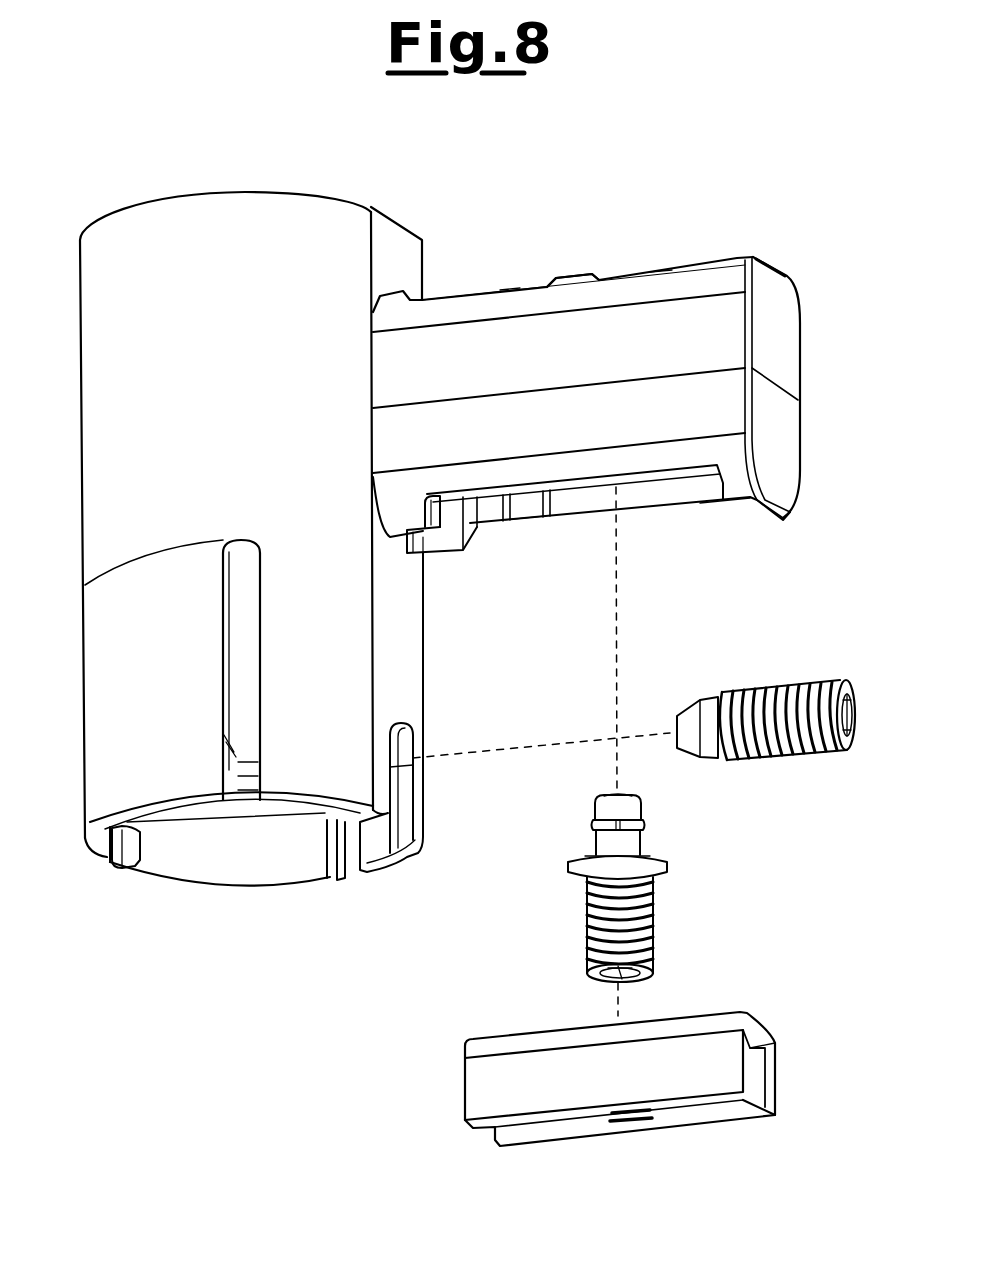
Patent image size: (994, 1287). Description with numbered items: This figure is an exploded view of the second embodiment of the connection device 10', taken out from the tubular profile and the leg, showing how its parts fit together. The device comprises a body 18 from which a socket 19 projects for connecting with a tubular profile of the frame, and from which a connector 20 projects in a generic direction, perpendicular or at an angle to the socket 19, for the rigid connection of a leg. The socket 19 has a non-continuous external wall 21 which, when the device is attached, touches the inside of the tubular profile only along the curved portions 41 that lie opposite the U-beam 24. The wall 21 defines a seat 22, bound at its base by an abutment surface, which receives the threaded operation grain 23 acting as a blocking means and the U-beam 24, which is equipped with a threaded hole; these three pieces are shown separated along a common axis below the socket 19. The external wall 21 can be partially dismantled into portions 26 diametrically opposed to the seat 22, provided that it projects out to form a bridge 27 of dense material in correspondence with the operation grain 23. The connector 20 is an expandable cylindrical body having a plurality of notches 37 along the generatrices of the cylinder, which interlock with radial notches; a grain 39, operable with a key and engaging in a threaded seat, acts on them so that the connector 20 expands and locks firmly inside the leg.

The connection device 10' is at (575, 147).
The body 18 is at (166, 228).
The socket 19 is at (782, 266).
The connector 20 is at (115, 686).
The external wall 21 is at (705, 342).
The seat 22 is at (653, 490).
The threaded operation grain 23 is at (586, 914).
The U-beam 24 is at (702, 1057).
The portions 26 is at (520, 288).
The bridge 27 is at (577, 272).
The notches 37 is at (237, 676).
The grain 39 is at (792, 750).
The curved portions 41 is at (450, 310).